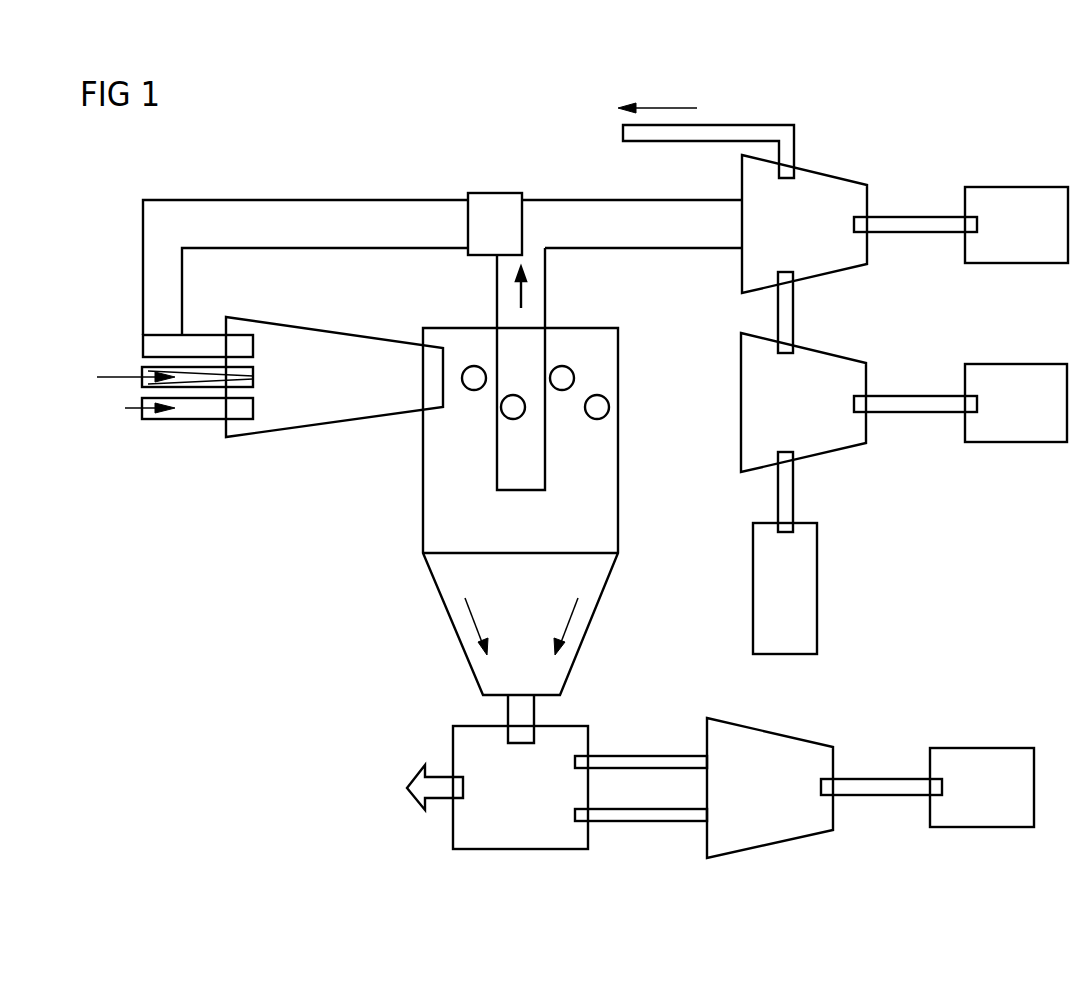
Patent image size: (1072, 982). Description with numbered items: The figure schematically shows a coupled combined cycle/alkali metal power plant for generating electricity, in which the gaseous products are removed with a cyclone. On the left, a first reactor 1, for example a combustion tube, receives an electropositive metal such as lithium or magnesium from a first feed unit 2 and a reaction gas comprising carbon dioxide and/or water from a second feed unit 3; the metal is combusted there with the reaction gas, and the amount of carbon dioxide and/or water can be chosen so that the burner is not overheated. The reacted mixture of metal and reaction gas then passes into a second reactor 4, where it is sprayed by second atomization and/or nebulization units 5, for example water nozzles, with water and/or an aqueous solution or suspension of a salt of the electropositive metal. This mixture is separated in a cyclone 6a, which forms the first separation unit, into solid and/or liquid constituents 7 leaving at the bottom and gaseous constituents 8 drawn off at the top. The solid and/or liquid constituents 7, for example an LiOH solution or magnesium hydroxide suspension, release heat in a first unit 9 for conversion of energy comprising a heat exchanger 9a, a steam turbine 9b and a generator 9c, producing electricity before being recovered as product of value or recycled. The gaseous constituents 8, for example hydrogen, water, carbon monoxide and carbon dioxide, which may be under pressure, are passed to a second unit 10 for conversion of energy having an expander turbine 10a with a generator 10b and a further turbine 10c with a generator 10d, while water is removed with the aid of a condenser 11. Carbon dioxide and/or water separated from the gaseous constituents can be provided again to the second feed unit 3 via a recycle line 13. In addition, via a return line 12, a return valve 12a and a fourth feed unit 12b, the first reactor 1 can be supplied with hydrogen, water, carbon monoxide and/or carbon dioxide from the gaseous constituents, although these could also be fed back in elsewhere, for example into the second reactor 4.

The first reactor 1 is at (332, 345).
The first feed unit 2 is at (166, 377).
The second feed unit 3 is at (180, 408).
The second reactor 4 is at (610, 462).
The second atomization and/or nebulization units 5 is at (474, 378).
The cyclone 6a is at (411, 490).
The solid and/or liquid constituents 7 is at (425, 787).
The gaseous constituents 8 is at (572, 207).
The first unit for conversion of energy 9 is at (453, 865).
The heat exchanger 9a is at (580, 730).
The steam turbine 9b is at (783, 745).
The generator 9c is at (1000, 758).
The second unit for conversion of energy 10 is at (743, 114).
The expander turbine 10a is at (833, 267).
The generator 10b is at (1028, 253).
The turbine 10c is at (833, 447).
The generator 10d is at (1027, 433).
The condenser 11 is at (807, 580).
The return line 12 is at (303, 208).
The return valve 12a is at (497, 207).
The fourth feed unit 12b is at (147, 345).
The recycle line 13 is at (698, 142).